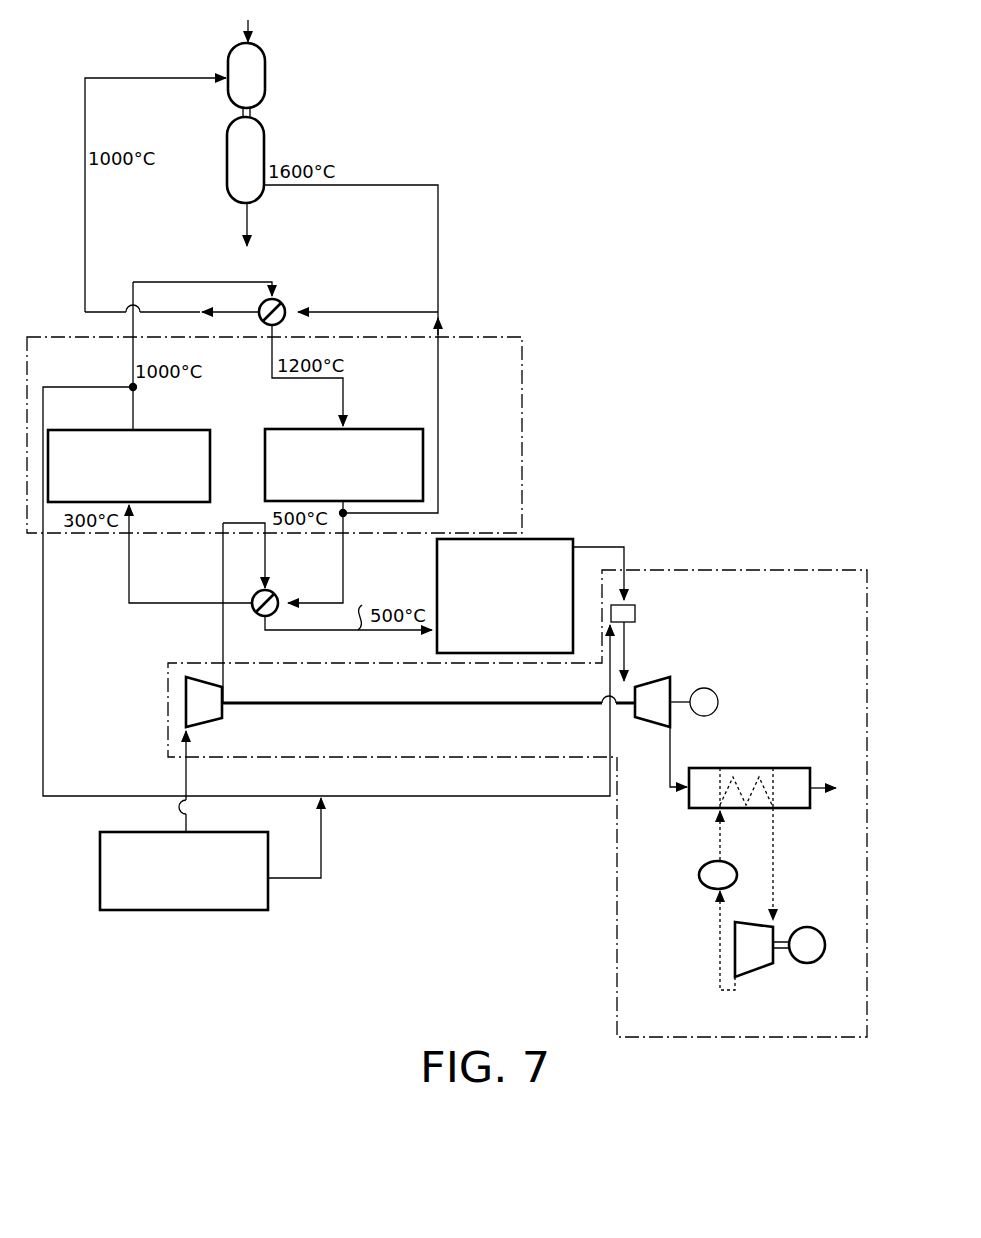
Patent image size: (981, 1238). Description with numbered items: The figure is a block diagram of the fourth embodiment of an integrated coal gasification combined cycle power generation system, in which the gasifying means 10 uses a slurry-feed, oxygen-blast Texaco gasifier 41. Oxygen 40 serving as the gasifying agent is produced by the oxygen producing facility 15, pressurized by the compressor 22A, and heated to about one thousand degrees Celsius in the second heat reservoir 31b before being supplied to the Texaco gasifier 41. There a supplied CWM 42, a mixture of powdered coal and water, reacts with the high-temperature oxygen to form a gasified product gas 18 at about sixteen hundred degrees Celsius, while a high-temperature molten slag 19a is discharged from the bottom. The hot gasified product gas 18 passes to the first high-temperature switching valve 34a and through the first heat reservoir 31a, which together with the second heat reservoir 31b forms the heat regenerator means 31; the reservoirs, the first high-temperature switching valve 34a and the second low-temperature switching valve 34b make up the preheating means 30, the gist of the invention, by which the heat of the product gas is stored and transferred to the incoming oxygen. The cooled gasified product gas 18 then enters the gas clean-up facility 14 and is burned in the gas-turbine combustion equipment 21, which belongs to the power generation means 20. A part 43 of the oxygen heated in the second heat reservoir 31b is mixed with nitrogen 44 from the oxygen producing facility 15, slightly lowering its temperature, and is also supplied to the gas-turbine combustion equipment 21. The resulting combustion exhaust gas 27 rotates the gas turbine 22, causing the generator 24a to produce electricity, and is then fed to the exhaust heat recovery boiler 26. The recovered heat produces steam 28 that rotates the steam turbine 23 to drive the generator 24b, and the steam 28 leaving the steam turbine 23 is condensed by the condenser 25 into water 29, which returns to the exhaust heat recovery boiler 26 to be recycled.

The gasifying means 10 is at (318, 65).
The gas clean-up facility 14 is at (500, 653).
The oxygen producing facility 15 is at (205, 910).
The gasified product gas 18 is at (438, 212).
The high-temperature molten slag 19a is at (246, 226).
The power generation means 20 is at (820, 570).
The gas-turbine combustion equipment 21 is at (636, 610).
The gas turbine 22 is at (652, 722).
The compressor 22A is at (222, 717).
The steam turbine 23 is at (765, 977).
The generator 24a is at (704, 716).
The generator 24b is at (809, 927).
The condenser 25 is at (699, 875).
The exhaust heat recovery boiler 26 is at (780, 768).
The combustion exhaust gas 27 is at (626, 640).
The steam 28 is at (775, 850).
The water 29 is at (718, 835).
The preheating means 30 is at (508, 324).
The heat regenerator means 31 is at (522, 455).
The first heat reservoir 31a is at (263, 479).
The second heat reservoir 31b is at (196, 430).
The first high-temperature switching valve 34a is at (283, 302).
The second low-temperature switching valve 34b is at (258, 616).
The oxygen 40 is at (86, 108).
The Texaco gasifier 41 is at (265, 88).
The CWM 42 is at (250, 27).
The part of oxygen 43 is at (44, 650).
The nitrogen 44 is at (322, 862).